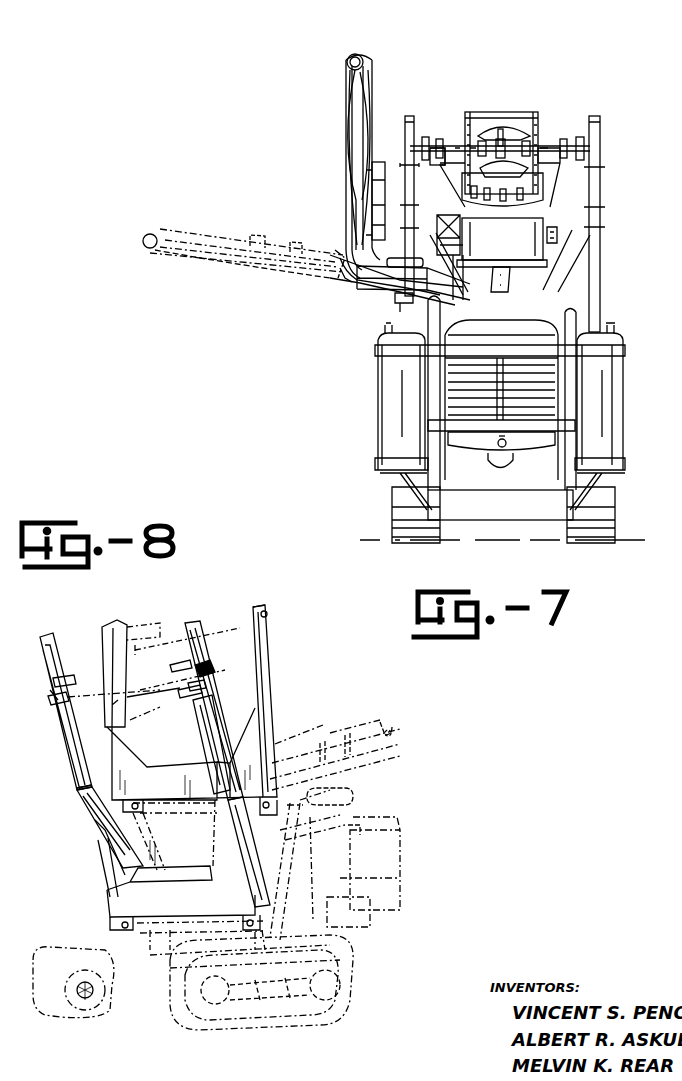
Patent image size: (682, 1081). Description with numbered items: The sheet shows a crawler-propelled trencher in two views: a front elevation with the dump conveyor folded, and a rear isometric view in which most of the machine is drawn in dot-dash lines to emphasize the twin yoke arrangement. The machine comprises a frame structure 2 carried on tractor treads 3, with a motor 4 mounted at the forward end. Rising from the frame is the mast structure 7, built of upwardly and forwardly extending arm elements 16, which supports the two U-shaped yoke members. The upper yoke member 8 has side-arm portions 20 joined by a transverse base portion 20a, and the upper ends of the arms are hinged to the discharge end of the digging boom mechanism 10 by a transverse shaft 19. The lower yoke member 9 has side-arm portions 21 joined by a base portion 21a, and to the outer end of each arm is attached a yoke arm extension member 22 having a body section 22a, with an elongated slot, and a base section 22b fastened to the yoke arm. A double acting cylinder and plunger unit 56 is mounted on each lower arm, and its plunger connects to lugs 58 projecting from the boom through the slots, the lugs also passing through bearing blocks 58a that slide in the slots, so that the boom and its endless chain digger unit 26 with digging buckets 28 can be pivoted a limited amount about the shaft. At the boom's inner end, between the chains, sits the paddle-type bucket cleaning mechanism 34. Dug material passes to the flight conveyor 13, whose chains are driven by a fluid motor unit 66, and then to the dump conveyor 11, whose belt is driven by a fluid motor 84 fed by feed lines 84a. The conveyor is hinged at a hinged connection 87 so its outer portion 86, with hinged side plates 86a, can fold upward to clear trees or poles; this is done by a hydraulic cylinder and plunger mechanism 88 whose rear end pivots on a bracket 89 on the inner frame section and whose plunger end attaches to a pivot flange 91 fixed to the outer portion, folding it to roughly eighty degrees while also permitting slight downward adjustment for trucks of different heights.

In FIG. 7, the frame structure 2 is at (520, 512).
In FIG. 8, the frame structure 2 is at (150, 965).
In FIG. 7, the tractor treads 3 is at (616, 508).
In FIG. 8, the tractor treads 3 is at (208, 1020).
In FIG. 7, the motor 4 is at (550, 401).
In FIG. 8, the mast structure 7 is at (92, 876).
In FIG. 7, the upper yoke member 8 is at (570, 256).
In FIG. 8, the upper yoke member 8 is at (277, 693).
In FIG. 8, the lower yoke member 9 is at (80, 822).
In FIG. 7, the digging boom mechanism 10 is at (452, 160).
In FIG. 8, the digging boom mechanism 10 is at (230, 612).
In FIG. 7, the dump conveyor 11 is at (372, 104).
In FIG. 8, the dump conveyor 11 is at (337, 735).
In FIG. 7, the flight conveyor 13 is at (548, 248).
In FIG. 8, the arm elements 16 is at (150, 846).
In FIG. 8, the shaft 19 is at (268, 613).
In FIG. 7, the side-arm portions 20 is at (582, 180).
In FIG. 8, the side-arm portions 20 is at (112, 625).
In FIG. 8, the transverse base portion 20a is at (172, 778).
In FIG. 8, the side-arm portions 21 is at (88, 848).
In FIG. 8, the base portion 21a is at (112, 903).
In FIG. 8, the yoke arm extension member 22 is at (48, 640).
In FIG. 8, the body section 22a is at (195, 620).
In FIG. 8, the base section 22b is at (207, 684).
In FIG. 7, the endless chain digger unit 26 is at (535, 114).
In FIG. 7, the digging buckets 28 is at (530, 205).
In FIG. 7, the bucket cleaning mechanism 34 is at (501, 122).
In FIG. 8, the cylinder and plunger unit 56 is at (222, 705).
In FIG. 8, the lugs 58 is at (65, 676).
In FIG. 8, the bearing blocks 58a is at (205, 668).
In FIG. 7, the fluid motor unit 66 is at (447, 228).
In FIG. 7, the fluid motor 84 is at (363, 57).
In FIG. 7, the feed lines 84a is at (222, 262).
In FIG. 7, the outer portion 86 is at (368, 138).
In FIG. 7, the side plates 86a is at (380, 178).
In FIG. 7, the hinged connection 87 is at (350, 280).
In FIG. 7, the hydraulic cylinder and plunger mechanism 88 is at (398, 258).
In FIG. 7, the bracket 89 is at (402, 303).
In FIG. 7, the pivot flange 91 is at (350, 260).